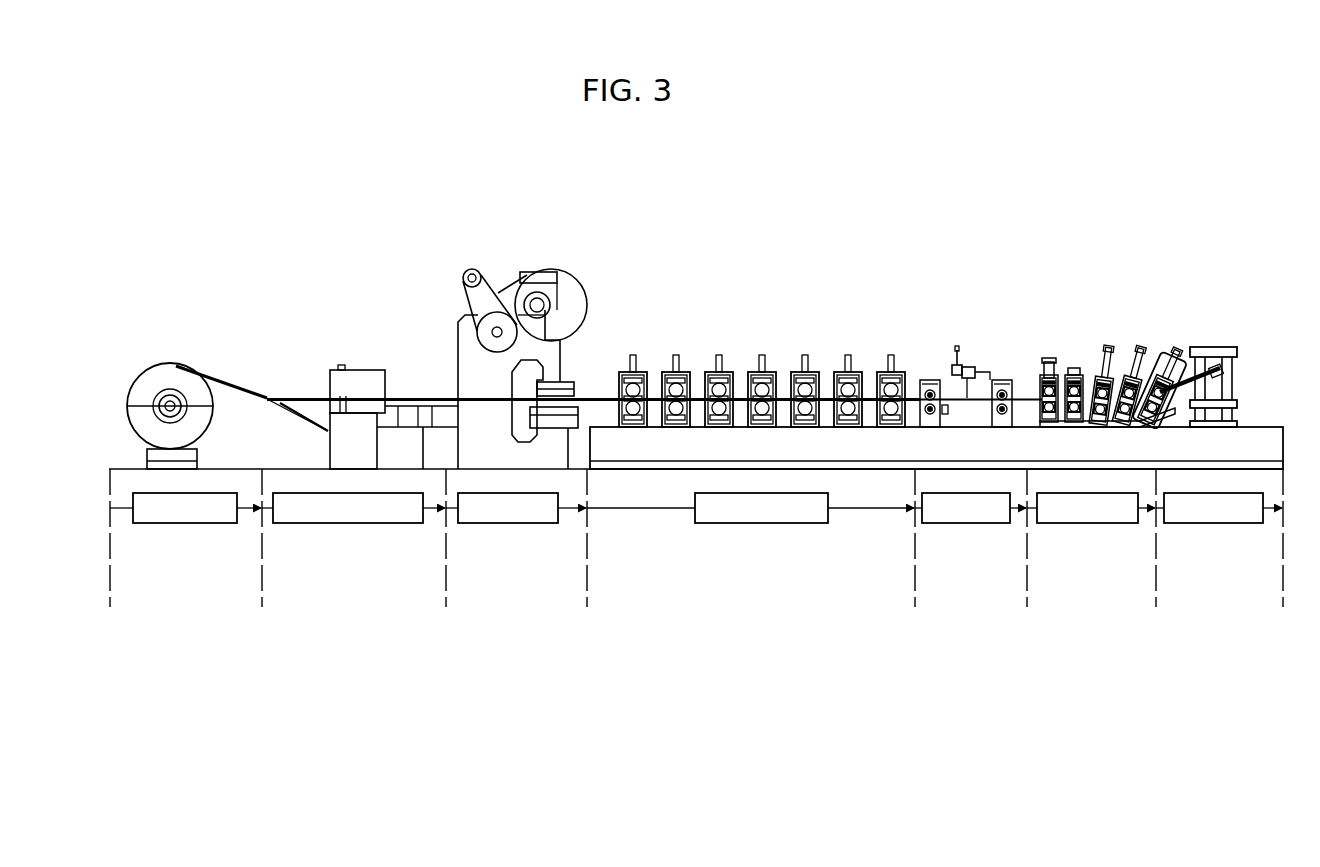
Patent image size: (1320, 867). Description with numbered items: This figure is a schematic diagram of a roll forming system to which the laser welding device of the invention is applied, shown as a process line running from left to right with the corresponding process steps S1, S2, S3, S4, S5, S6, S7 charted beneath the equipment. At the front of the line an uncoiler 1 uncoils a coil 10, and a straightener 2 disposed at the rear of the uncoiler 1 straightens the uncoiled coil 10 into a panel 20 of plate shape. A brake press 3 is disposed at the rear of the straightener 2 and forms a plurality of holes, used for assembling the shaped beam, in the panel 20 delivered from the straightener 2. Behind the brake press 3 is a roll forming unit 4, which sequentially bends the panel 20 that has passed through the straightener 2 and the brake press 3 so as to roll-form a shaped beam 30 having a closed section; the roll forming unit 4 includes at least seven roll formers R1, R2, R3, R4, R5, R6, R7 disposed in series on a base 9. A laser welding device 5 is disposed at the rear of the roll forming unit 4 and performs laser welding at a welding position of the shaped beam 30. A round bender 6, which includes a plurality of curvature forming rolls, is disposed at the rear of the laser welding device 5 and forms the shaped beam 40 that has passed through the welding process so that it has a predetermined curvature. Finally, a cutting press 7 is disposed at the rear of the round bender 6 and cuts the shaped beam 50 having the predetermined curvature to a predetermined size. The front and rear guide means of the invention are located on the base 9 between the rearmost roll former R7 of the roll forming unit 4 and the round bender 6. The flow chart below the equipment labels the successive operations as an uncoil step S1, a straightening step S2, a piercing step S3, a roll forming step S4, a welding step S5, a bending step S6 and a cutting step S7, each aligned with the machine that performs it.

The uncoiler 1 is at (173, 388).
The coil 10 is at (220, 376).
The straightener 2 is at (358, 366).
The panel 20 is at (423, 399).
The brake press 3 is at (524, 265).
The roll forming unit 4 is at (762, 306).
The roll former R1 is at (633, 355).
The roll former R2 is at (676, 355).
The roll former R3 is at (719, 355).
The roll former R4 is at (762, 355).
The roll former R5 is at (805, 355).
The roll former R6 is at (848, 355).
The roll former R7 is at (891, 355).
The laser welding device 5 is at (982, 335).
The shaped beam 30 is at (921, 378).
The shaped beam 40 is at (1033, 377).
The round bender 6 is at (1094, 328).
The shaped beam 50 is at (1173, 372).
The cutting press 7 is at (1219, 343).
The base 9 is at (845, 440).
The uncoil step S1 is at (182, 524).
The straightening step S2 is at (350, 524).
The piercing step S3 is at (508, 524).
The roll forming step S4 is at (760, 524).
The welding step S5 is at (972, 524).
The bending step S6 is at (1088, 524).
The cutting step S7 is at (1213, 524).